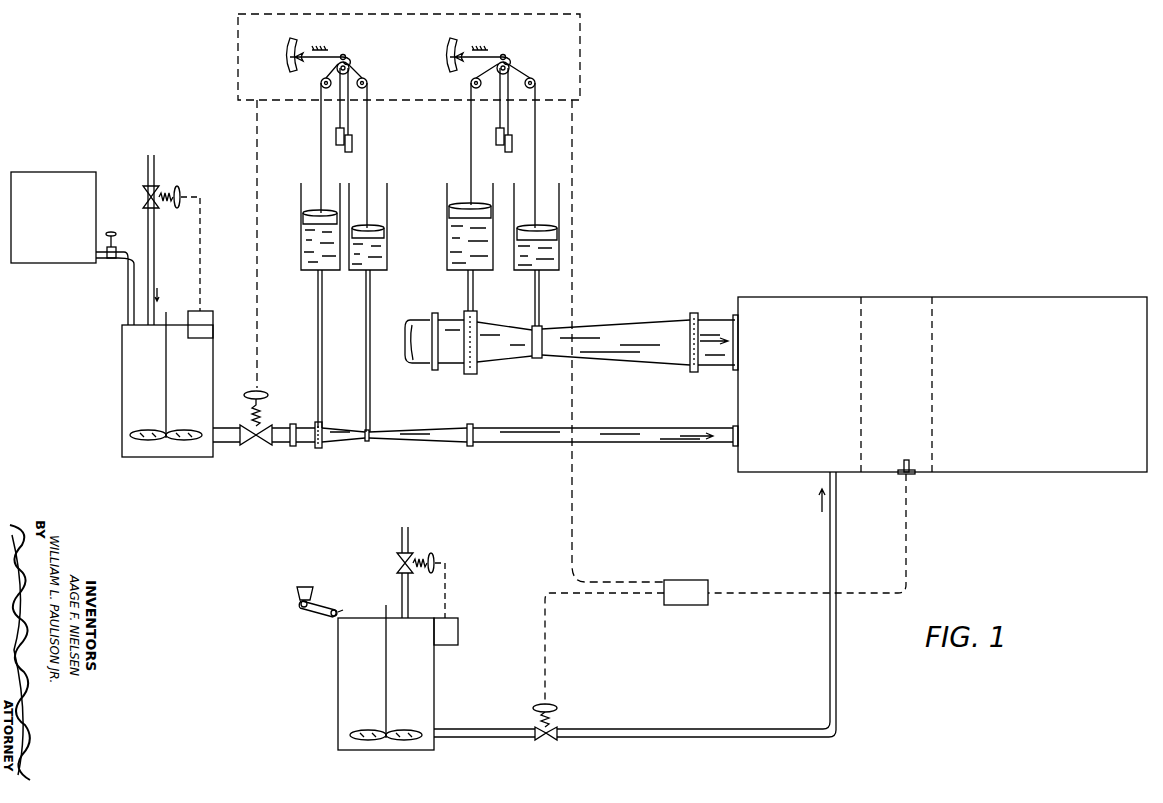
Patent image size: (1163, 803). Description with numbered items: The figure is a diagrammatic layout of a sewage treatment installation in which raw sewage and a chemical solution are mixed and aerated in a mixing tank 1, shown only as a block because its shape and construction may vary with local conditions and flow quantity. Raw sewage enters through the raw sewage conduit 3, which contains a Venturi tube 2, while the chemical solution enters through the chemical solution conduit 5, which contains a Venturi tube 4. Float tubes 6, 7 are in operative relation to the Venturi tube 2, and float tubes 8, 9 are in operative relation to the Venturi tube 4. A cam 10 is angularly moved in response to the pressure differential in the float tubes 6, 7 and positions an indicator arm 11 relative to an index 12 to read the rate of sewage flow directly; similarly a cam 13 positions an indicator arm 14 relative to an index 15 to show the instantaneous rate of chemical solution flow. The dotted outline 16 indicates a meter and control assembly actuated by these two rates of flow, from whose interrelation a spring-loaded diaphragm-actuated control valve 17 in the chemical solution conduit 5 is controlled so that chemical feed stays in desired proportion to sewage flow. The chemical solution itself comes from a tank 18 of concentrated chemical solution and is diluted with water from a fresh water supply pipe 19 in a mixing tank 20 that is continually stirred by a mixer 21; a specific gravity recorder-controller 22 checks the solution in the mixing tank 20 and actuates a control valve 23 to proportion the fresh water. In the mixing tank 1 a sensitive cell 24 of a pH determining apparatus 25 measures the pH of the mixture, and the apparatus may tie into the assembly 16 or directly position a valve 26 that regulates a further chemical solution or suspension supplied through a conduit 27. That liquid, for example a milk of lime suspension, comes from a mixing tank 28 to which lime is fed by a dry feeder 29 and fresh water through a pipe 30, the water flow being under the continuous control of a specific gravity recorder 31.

The mixing tank 1 is at (1018, 290).
The Venturi tube 2 is at (575, 333).
The raw sewage conduit 3 is at (703, 370).
The Venturi tube 4 is at (375, 446).
The chemical solution conduit 5 is at (531, 445).
The float tube 6 is at (483, 272).
The float tube 7 is at (552, 272).
The float tube 8 is at (327, 272).
The float tube 9 is at (375, 272).
The cam 10 is at (511, 60).
The indicator arm 11 is at (465, 56).
The index 12 is at (448, 55).
The cam 13 is at (349, 60).
The indicator arm 14 is at (305, 56).
The index 15 is at (288, 55).
The meter and control assembly 16 is at (583, 84).
The control valve 17 is at (250, 448).
The tank of concentrated chemical solution 18 is at (43, 268).
The fresh water supply pipe 19 is at (163, 153).
The mixing tank 20 is at (122, 382).
The mixer 21 is at (175, 426).
The specific gravity recorder-controller 22 is at (213, 320).
The control valve 23 is at (143, 204).
The sensitive cell 24 is at (900, 464).
The pH determining apparatus 25 is at (690, 606).
The valve 26 is at (548, 741).
The conduit 27 is at (650, 716).
The mixing tank 28 is at (434, 680).
The dry feeder 29 is at (310, 616).
The pipe 30 is at (408, 532).
The specific gravity recorder 31 is at (458, 636).